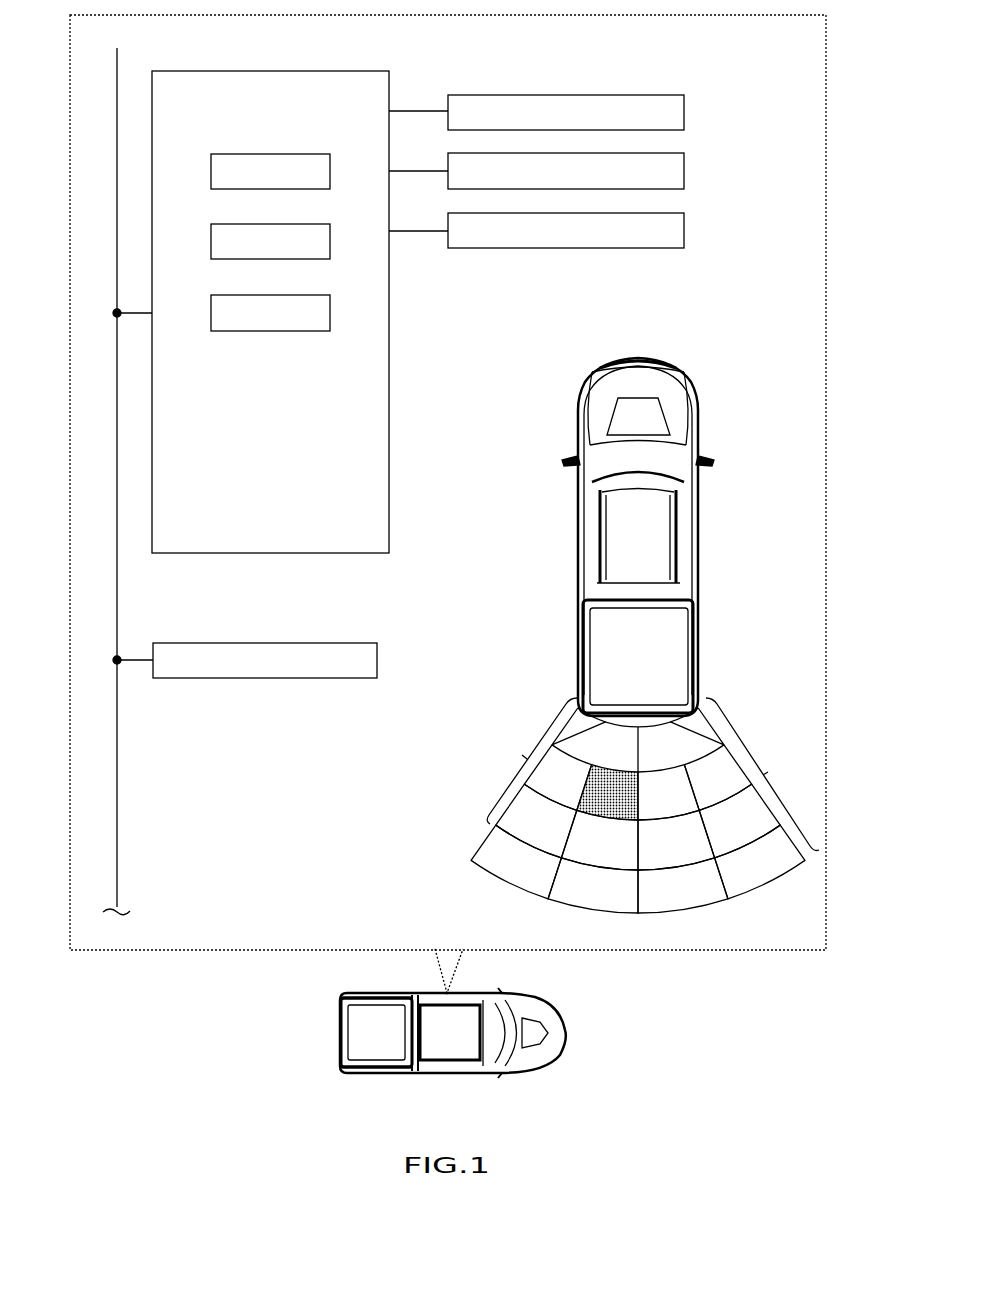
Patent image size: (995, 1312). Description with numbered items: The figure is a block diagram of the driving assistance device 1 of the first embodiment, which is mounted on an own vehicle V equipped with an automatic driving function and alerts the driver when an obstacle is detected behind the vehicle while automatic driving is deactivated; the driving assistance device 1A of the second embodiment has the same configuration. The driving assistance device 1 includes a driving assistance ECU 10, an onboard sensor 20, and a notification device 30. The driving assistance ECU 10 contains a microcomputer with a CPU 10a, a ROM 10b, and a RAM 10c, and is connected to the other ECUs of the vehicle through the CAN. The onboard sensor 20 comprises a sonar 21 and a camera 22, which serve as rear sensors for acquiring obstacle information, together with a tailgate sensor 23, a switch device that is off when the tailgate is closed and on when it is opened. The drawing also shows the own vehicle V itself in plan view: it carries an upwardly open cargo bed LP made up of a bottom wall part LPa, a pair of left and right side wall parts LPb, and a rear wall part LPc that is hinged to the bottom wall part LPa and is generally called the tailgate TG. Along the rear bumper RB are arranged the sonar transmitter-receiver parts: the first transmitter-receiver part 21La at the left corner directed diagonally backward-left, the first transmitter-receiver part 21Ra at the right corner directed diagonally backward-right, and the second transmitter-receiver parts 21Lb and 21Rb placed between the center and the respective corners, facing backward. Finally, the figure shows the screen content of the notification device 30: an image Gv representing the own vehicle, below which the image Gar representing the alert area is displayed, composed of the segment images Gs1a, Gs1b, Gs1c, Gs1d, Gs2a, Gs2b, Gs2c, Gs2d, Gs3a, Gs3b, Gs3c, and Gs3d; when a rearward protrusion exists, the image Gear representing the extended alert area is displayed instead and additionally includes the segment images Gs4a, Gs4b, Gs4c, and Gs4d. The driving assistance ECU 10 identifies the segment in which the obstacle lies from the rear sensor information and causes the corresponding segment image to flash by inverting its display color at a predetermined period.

The driving assistance device 1 is at (448, 503).
The driving assistance device 1A is at (641, 950).
The Controller Area Network CAN is at (124, 468).
The driving assistance ECU 10 is at (330, 71).
The CPU 10a is at (300, 154).
The ROM 10b is at (300, 224).
The RAM 10c is at (300, 295).
The onboard sensor 20 is at (696, 92).
The sonar 21 is at (685, 111).
The camera 22 is at (685, 171).
The tailgate sensor 23 is at (685, 231).
The notification device 30 is at (335, 643).
The image representing the own vehicle Gv is at (700, 485).
The segment image Gs1a is at (697, 712).
The segment image Gs1b is at (655, 732).
The segment image Gs1c is at (617, 730).
The segment image Gs1d is at (580, 712).
The segment image Gs2a is at (717, 777).
The segment image Gs2b is at (668, 792).
The segment image Gs2c is at (607, 792).
The segment image Gs2d is at (557, 777).
The segment image Gs3a is at (739, 821).
The segment image Gs3b is at (676, 840).
The segment image Gs3c is at (599, 840).
The segment image Gs3d is at (536, 821).
The segment image Gs4a is at (760, 862).
The segment image Gs4b is at (683, 885).
The segment image Gs4c is at (593, 885).
The segment image Gs4d is at (516, 862).
The image representing the AR Gar is at (531, 761).
The image representing the EAR Gear is at (763, 774).
The vehicle V is at (566, 1033).
The cargo bed LP is at (345, 989).
The bottom wall part LPa is at (375, 1012).
The side wall part LPb is at (366, 1069).
The rear wall part LPc is at (376, 1029).
The tailgate TG is at (376, 1032).
The rear bumper RB is at (368, 1047).
The first transmitter-receiver part 21La is at (337, 1000).
The second transmitter-receiver part 21Lb is at (338, 1013).
The second transmitter-receiver part 21Rb is at (338, 1047).
The first transmitter-receiver part 21Ra is at (338, 1063).